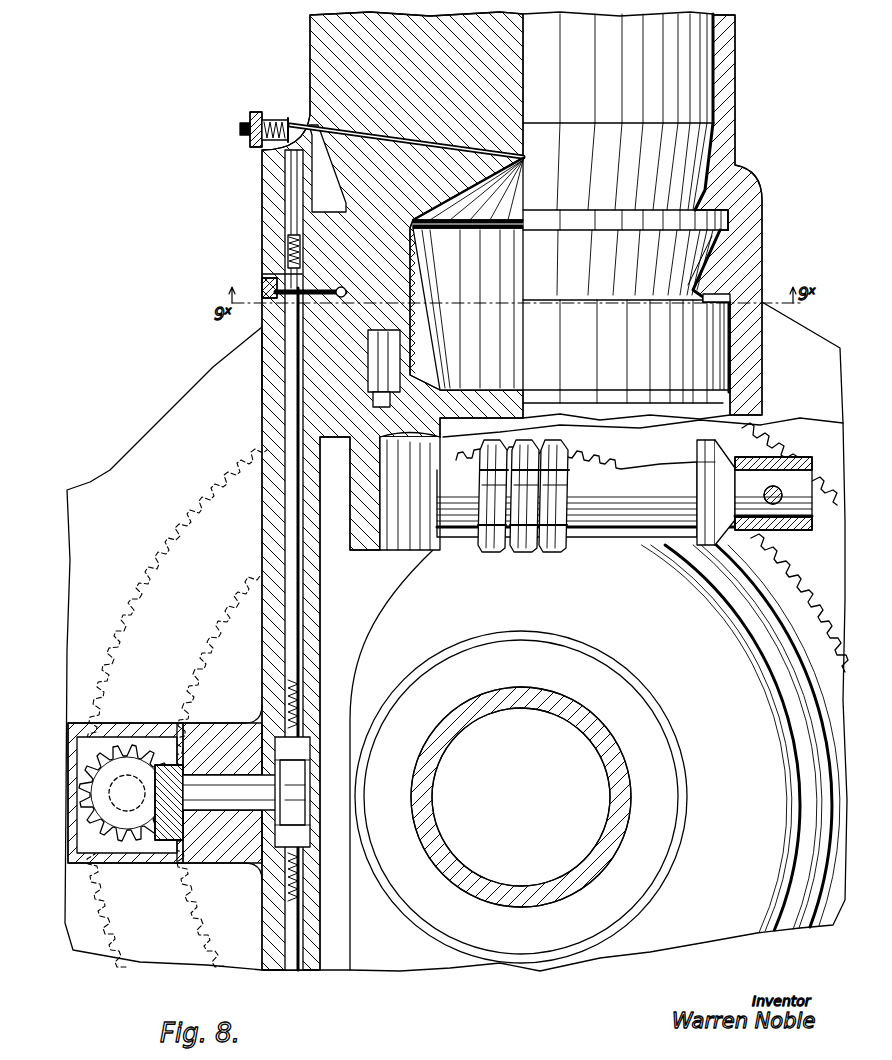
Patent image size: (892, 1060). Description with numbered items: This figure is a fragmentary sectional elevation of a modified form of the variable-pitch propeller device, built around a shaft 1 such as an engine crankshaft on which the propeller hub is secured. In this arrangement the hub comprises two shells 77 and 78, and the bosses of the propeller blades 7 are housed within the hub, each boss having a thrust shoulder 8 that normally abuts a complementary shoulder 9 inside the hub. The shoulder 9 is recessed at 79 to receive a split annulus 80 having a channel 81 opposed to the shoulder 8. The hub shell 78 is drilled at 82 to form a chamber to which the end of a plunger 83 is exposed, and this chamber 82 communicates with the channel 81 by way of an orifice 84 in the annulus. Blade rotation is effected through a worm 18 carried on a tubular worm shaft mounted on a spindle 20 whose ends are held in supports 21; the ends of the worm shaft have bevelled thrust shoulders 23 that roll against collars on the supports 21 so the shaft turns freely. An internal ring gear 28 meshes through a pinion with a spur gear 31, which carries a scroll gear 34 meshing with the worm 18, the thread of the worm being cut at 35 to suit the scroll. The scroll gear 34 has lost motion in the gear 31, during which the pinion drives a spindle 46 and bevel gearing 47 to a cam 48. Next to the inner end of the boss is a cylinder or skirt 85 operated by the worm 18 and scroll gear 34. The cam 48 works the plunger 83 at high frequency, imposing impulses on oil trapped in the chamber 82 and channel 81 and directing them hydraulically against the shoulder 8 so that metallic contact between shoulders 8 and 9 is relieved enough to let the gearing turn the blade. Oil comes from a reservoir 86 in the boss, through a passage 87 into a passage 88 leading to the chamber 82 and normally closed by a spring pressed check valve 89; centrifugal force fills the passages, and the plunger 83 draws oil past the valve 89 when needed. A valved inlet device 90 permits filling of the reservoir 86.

The shaft 1 is at (606, 760).
The bosses of propeller blades 7 is at (694, 78).
The thrust shoulders 8 is at (717, 305).
The complementary shoulders 9 is at (715, 287).
The worm 18 is at (578, 462).
The spindle 20 is at (792, 485).
The supports 21 is at (805, 527).
The bevelled thrust shoulders 23 is at (715, 462).
The internal ring gear 28 is at (116, 638).
The spur gear 31 is at (193, 684).
The scroll gear 34 is at (776, 577).
The thread of the worm 35 is at (556, 500).
The spindle 46 is at (125, 745).
The bevel gearing 47 is at (165, 832).
The cam 48 is at (305, 772).
The hub shell 77 is at (720, 142).
The hub shell 78 is at (318, 78).
The recess 79 is at (728, 291).
The split annulus 80 is at (338, 296).
The channel 81 is at (262, 363).
The chamber 82 is at (265, 275).
The plunger 83 is at (291, 512).
The orifice 84 is at (313, 250).
The cylinder or skirt 85 is at (396, 538).
The reservoir 86 is at (515, 190).
The passage 87 is at (468, 189).
The passage 88 is at (263, 152).
The spring pressed check valve 89 is at (288, 247).
The valved inlet device 90 is at (252, 118).